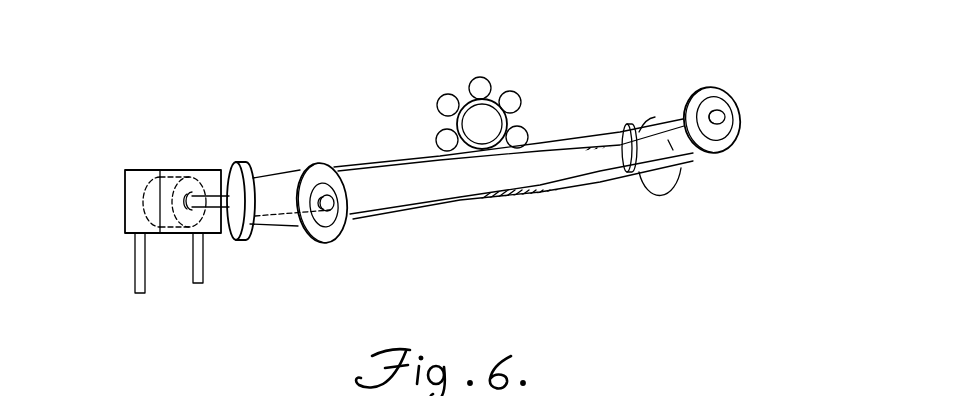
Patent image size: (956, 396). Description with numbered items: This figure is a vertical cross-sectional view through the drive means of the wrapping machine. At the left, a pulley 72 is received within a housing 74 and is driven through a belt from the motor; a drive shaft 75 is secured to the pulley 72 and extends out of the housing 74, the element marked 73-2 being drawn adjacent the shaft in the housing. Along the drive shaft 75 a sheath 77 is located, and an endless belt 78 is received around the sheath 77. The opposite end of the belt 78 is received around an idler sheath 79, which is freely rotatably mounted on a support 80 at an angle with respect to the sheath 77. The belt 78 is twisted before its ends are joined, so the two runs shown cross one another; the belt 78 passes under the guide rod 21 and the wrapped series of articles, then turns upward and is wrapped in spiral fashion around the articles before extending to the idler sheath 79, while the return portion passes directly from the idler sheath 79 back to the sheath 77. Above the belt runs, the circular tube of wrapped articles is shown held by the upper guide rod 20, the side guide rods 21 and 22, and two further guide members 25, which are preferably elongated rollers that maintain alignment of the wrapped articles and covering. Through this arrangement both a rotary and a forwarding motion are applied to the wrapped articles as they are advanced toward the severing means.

The upper guide rod 20 is at (483, 77).
The side guide rod 21 is at (436, 139).
The side guide rod 22 is at (528, 131).
The guide members 25 is at (442, 98).
The pulley 72 is at (136, 275).
The motor shaft 73-2 is at (134, 202).
The housing 74 is at (127, 223).
The drive shaft 75 is at (333, 205).
The sheath 77 is at (311, 236).
The endless belt 78 is at (360, 166).
The idler sheath 79 is at (711, 87).
The support 80 is at (723, 118).